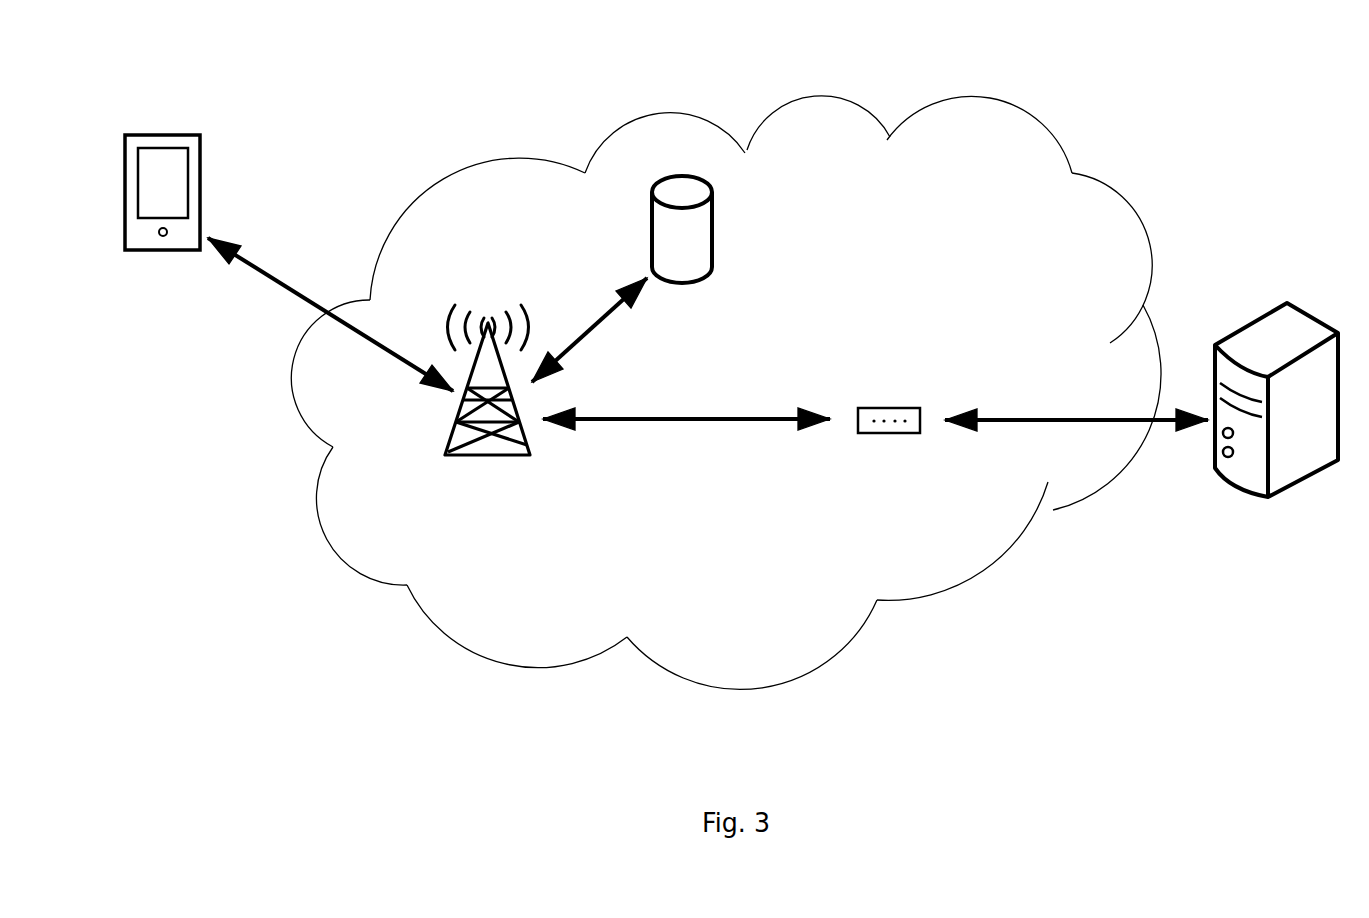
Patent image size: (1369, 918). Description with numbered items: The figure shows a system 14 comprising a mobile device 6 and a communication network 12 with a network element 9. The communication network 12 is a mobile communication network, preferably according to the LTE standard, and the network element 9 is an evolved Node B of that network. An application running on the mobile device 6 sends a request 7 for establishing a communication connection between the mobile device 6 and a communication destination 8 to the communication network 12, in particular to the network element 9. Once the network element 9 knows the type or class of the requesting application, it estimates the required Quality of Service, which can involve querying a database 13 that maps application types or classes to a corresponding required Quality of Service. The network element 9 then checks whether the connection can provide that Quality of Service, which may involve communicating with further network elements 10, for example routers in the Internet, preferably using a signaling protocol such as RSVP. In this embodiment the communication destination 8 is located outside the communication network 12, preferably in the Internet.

The mobile device 6 is at (173, 133).
The request 7 is at (272, 272).
The communication destination 8 is at (1293, 302).
The network element 9 is at (510, 453).
The further network elements 10 is at (888, 402).
The communication network 12 is at (1053, 120).
The database 13 is at (717, 243).
The system 14 is at (1083, 588).